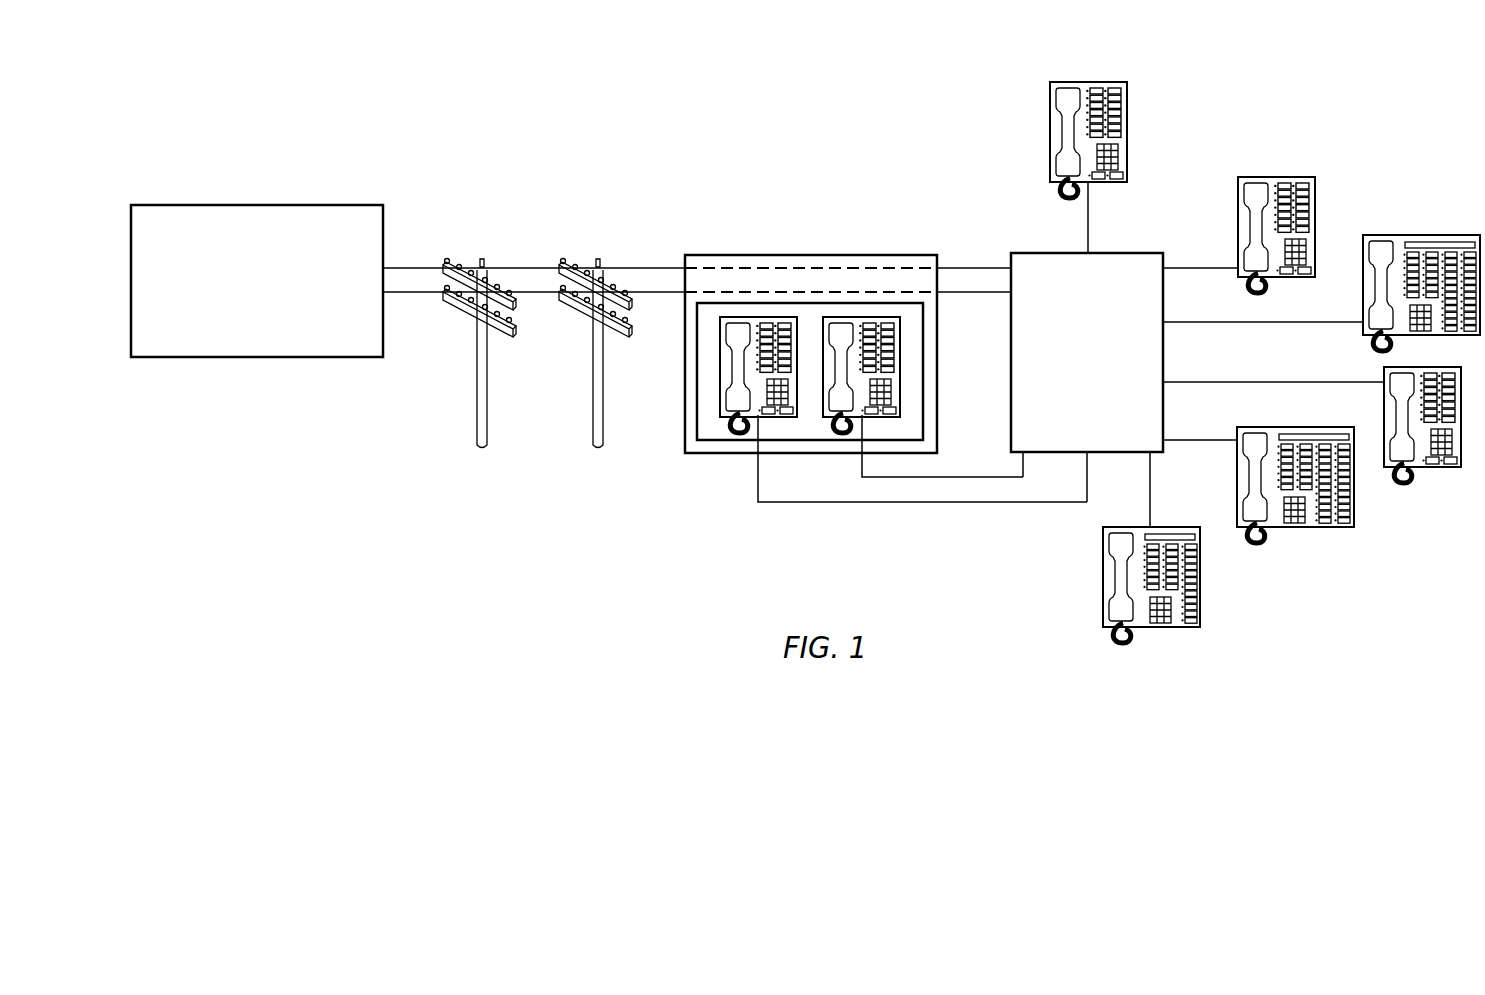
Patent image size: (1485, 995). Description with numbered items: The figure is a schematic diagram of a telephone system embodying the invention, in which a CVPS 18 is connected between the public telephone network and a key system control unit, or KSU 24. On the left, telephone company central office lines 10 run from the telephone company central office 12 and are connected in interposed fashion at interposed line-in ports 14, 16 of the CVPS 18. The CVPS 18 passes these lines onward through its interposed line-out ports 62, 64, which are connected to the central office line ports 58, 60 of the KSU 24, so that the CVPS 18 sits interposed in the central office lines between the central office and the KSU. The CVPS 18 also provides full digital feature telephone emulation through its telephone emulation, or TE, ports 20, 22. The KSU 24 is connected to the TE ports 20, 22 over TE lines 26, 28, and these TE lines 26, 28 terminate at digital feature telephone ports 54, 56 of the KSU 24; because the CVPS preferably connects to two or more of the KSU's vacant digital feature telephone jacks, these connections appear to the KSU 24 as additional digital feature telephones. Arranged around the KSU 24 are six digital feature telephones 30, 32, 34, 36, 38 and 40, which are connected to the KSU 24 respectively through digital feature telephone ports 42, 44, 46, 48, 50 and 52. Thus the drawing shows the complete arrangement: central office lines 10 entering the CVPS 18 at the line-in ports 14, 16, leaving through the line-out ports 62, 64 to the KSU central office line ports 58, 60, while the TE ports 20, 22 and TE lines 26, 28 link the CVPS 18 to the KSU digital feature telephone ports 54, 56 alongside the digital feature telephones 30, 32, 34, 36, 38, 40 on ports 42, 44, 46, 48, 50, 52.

The telephone company central office lines 10 is at (415, 266).
The telephone company central office 12 is at (253, 358).
The interposed line-in port 14 is at (684, 296).
The interposed line-in port 16 is at (685, 265).
The CVPS 18 is at (812, 255).
The telephone emulation port 20 is at (758, 458).
The telephone emulation port 22 is at (862, 458).
The KSU 24 is at (1037, 252).
The TE line 26 is at (965, 504).
The TE line 28 is at (980, 476).
The digital feature telephone 30 is at (1088, 81).
The digital feature telephone 32 is at (1282, 176).
The digital feature telephone 34 is at (1423, 234).
The digital feature telephone 36 is at (1428, 471).
The digital feature telephone 38 is at (1295, 530).
The digital feature telephone 40 is at (1150, 630).
The digital feature telephone port 42 is at (1090, 248).
The digital feature telephone port 44 is at (1170, 265).
The digital feature telephone port 46 is at (1170, 320).
The digital feature telephone port 48 is at (1170, 380).
The digital feature telephone port 50 is at (1170, 438).
The digital feature telephone port 52 is at (1150, 456).
The digital feature telephone port 54 is at (1087, 456).
The digital feature telephone port 56 is at (1023, 456).
The central office line port 58 is at (1004, 264).
The central office line port 60 is at (1004, 295).
The interposed line-out port 62 is at (943, 264).
The interposed line-out port 64 is at (943, 295).